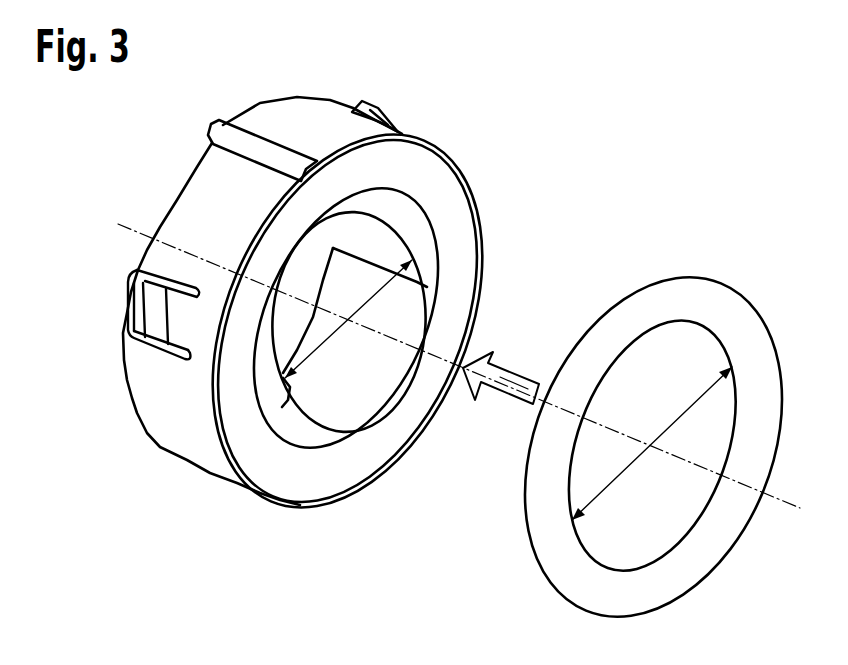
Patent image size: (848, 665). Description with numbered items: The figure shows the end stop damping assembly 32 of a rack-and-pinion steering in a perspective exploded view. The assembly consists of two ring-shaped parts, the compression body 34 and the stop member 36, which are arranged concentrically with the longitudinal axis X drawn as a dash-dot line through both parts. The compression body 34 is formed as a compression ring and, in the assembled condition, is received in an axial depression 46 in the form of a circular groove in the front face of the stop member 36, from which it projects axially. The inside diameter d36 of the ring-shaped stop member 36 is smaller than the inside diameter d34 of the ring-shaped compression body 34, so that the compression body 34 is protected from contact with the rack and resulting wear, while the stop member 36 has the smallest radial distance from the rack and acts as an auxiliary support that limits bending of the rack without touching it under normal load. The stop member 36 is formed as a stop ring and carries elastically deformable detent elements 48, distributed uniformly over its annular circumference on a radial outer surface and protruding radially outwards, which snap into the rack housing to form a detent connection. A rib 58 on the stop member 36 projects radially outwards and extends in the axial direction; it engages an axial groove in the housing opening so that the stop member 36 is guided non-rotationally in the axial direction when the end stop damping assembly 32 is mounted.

The end stop damping assembly 32 is at (651, 195).
The compression body 34 is at (538, 522).
The stop member 36 is at (157, 410).
The axial depression 46 is at (450, 211).
The detent elements 48 is at (381, 113).
The rib 58 is at (263, 150).
The longitudinal axis X is at (469, 378).
The inside diameter of the stop member d36 is at (348, 320).
The inside diameter of the compression body d34 is at (652, 443).